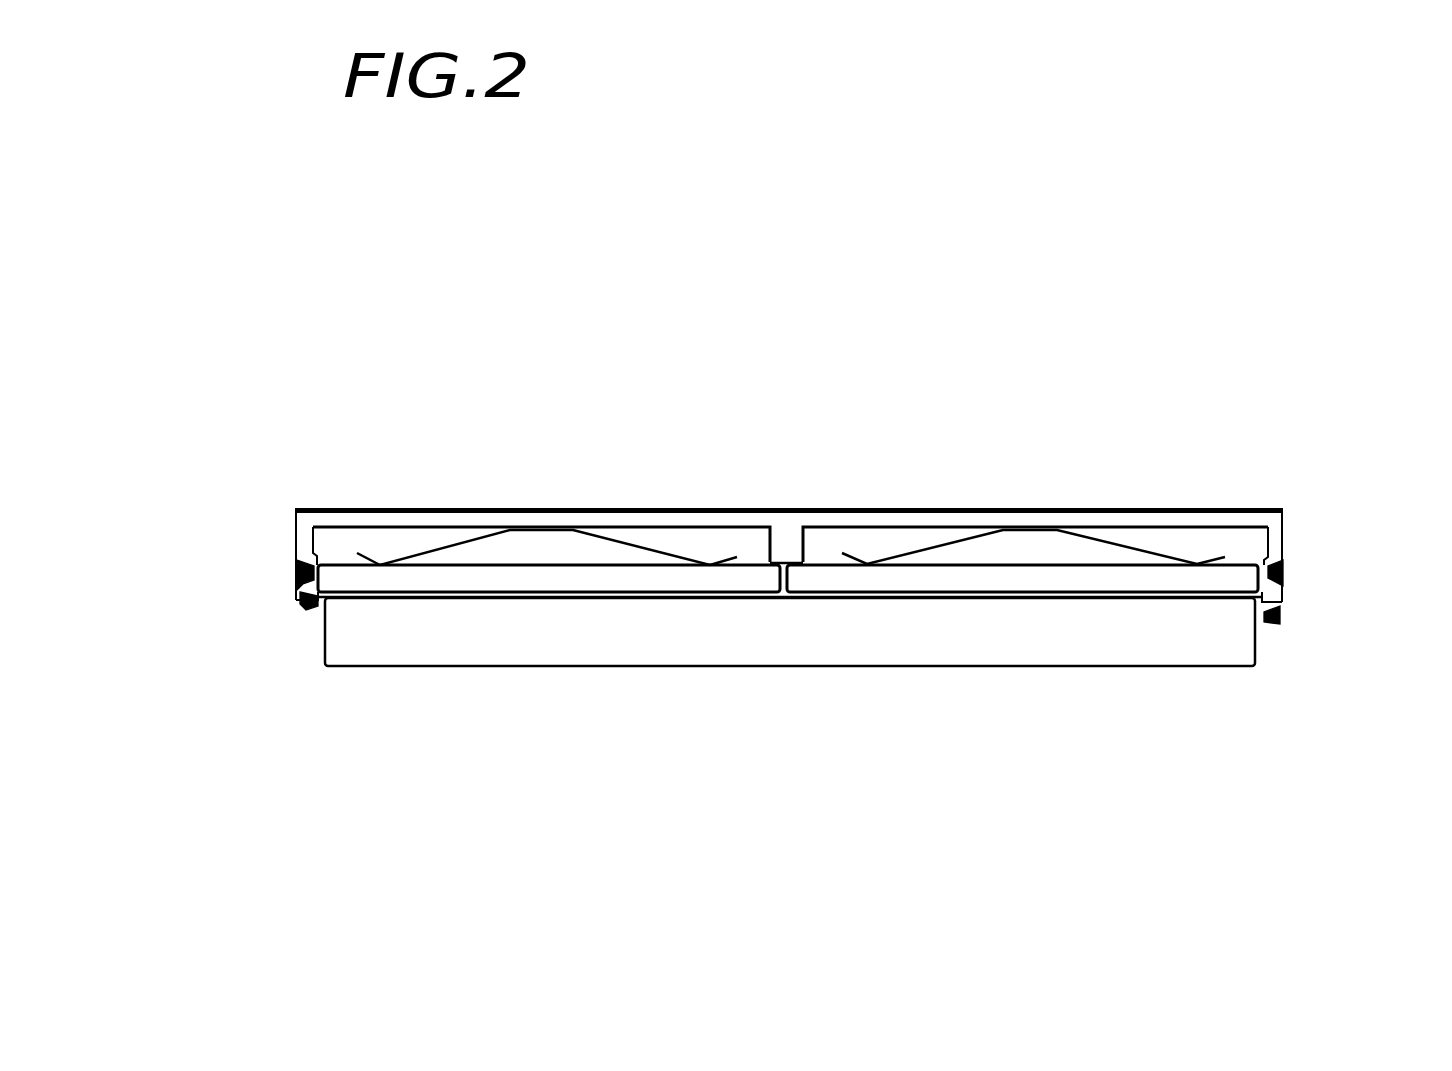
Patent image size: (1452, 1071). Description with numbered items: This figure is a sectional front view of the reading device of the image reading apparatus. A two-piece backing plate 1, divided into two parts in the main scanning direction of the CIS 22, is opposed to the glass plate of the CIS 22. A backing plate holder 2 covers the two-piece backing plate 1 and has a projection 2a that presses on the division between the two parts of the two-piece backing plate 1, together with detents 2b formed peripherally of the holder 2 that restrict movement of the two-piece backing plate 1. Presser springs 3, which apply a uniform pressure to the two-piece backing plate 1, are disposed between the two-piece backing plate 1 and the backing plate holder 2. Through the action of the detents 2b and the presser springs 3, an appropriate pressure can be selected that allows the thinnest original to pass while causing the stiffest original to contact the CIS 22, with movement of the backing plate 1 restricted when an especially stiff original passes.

The two-piece backing plate 1 is at (1093, 543).
The backing plate holder 2 is at (1256, 488).
The projection 2a is at (780, 556).
The detents 2b is at (286, 593).
The presser springs 3 is at (886, 533).
The CIS 22 is at (849, 689).